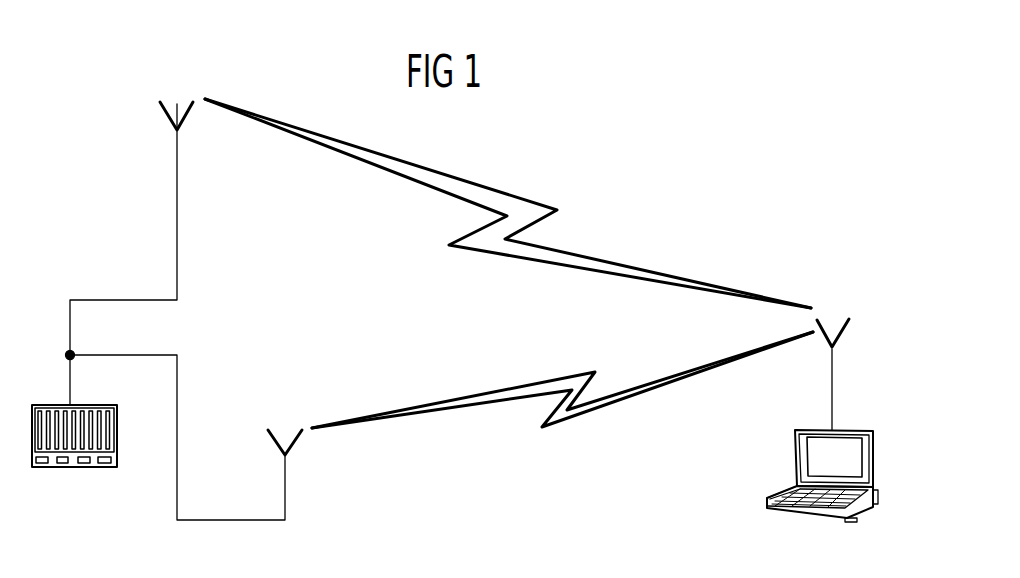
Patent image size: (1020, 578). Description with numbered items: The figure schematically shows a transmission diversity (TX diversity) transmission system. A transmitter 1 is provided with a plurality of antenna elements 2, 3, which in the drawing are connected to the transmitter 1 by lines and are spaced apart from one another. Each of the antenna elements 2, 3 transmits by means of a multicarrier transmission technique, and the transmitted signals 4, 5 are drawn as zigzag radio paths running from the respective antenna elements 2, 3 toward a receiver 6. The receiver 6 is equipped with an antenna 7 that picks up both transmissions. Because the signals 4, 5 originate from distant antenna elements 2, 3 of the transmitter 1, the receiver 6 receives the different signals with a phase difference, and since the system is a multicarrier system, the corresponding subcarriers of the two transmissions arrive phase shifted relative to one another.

The transmitter 1 is at (45, 403).
The antenna element 2 is at (165, 113).
The antenna element 3 is at (292, 450).
The multicarrier transmission signal 4 is at (538, 201).
The multicarrier transmission signal 5 is at (538, 382).
The receiver 6 is at (795, 450).
The antenna 7 is at (845, 333).